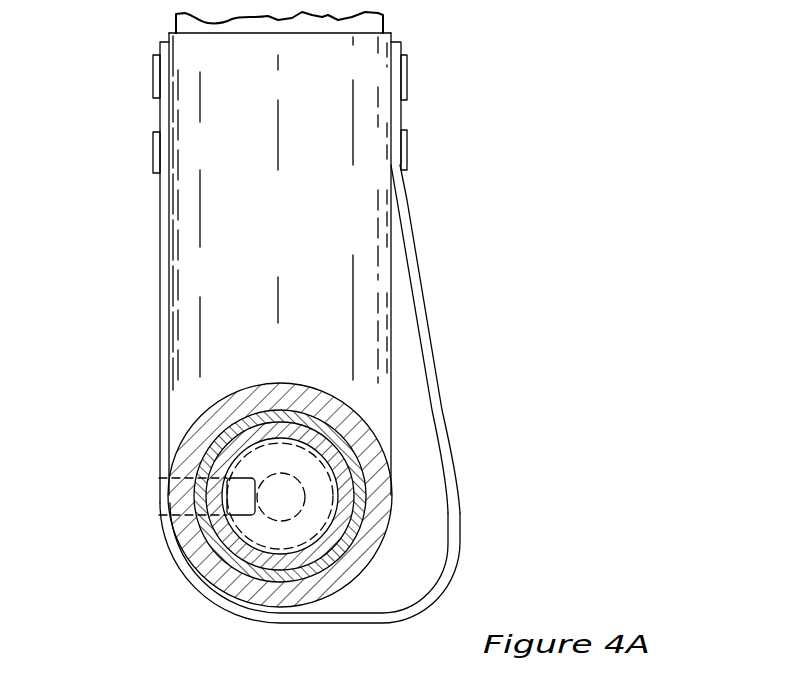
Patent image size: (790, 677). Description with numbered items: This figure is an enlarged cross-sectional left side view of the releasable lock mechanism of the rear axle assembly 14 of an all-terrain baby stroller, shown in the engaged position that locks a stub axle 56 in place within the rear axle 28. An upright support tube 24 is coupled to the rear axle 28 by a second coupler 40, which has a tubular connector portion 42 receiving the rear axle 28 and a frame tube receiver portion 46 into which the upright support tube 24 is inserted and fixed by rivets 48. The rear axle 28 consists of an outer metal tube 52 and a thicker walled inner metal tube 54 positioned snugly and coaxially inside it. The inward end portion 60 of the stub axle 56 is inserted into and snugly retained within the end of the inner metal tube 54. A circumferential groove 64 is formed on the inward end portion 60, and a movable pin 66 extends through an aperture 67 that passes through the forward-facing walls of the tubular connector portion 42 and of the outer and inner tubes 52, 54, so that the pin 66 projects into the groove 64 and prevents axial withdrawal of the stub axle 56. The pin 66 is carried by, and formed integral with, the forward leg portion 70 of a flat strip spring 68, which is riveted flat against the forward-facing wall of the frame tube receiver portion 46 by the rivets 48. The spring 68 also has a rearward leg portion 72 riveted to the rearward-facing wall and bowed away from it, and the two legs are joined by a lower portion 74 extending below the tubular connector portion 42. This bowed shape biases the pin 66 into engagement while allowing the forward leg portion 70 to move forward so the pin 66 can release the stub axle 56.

The rear axle assembly 14 is at (388, 488).
The upright support tube 24 is at (363, 25).
The rear axle 28 is at (208, 595).
The second coupler 40 is at (347, 207).
The tubular connector portion 42 is at (367, 547).
The frame tube receiver portion 46 is at (342, 235).
The rivets 48 is at (407, 75).
The outer metal tube 52 is at (313, 423).
The inner metal tube 54 is at (332, 560).
The stub axle 56 is at (260, 455).
The inward end portion 60 is at (315, 512).
The circumferential groove 64 is at (262, 557).
The movable pin 66 is at (253, 523).
The aperture 67 is at (173, 490).
The flat strip spring 68 is at (432, 348).
The forward leg portion 70 is at (162, 309).
The rearward leg portion 72 is at (418, 307).
The lower portion 74 is at (327, 620).